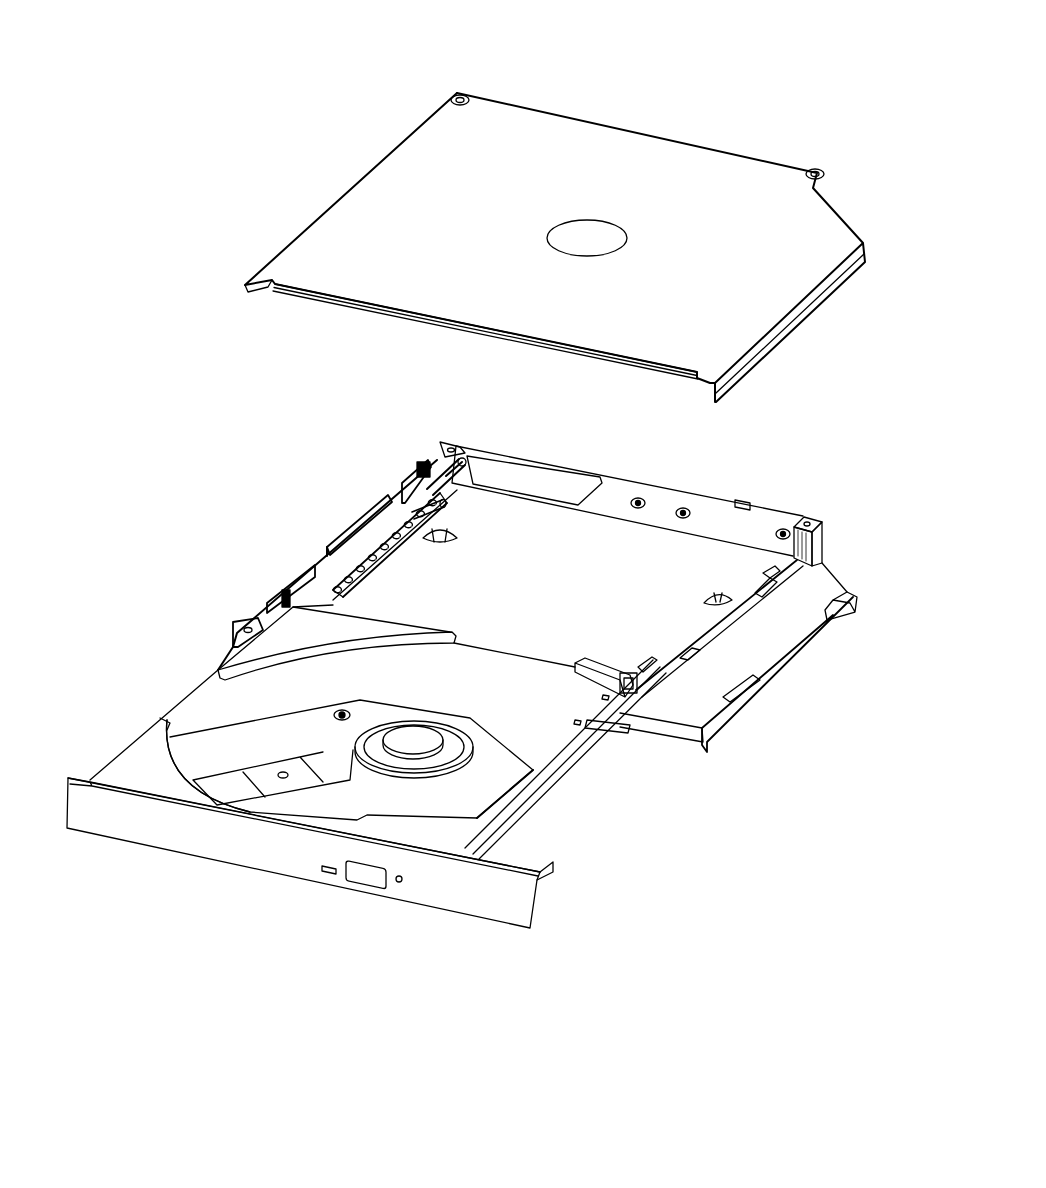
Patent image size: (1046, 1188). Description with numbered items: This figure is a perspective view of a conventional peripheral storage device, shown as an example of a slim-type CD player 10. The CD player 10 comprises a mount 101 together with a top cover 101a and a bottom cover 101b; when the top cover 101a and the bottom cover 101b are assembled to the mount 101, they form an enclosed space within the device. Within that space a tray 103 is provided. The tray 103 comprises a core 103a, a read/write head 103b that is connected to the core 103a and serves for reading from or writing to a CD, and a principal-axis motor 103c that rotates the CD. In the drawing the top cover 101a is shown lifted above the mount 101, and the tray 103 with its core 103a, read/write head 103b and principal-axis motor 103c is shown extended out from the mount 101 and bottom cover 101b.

The slim-type CD player 10 is at (755, 59).
The mount 101 is at (451, 434).
The top cover 101a is at (807, 320).
The bottom cover 101b is at (825, 543).
The tray 103 is at (215, 698).
The core 103a is at (457, 792).
The read/write head 103b is at (270, 770).
The principal-axis motor 103c is at (460, 758).